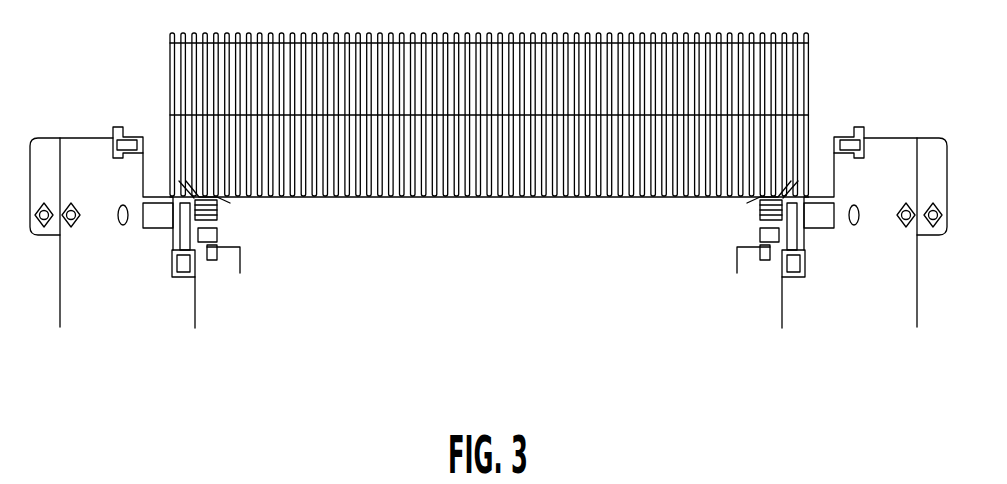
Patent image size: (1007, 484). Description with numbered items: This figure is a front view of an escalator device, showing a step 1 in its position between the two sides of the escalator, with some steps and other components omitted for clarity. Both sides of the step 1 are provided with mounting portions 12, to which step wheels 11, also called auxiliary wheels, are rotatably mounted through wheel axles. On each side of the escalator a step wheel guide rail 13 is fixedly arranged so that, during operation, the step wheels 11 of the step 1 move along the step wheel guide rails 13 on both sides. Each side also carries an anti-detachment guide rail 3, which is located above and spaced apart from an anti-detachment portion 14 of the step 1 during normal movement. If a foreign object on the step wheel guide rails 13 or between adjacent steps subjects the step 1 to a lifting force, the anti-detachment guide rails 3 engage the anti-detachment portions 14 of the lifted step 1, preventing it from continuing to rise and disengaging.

The step 1 is at (258, 77).
The step wheel 11 is at (190, 198).
The mounting portion 12 is at (217, 210).
The anti-detachment guide rail 3 is at (222, 249).
The anti-detachment portion 14 is at (215, 258).
The step wheel guide rail 13 is at (180, 260).